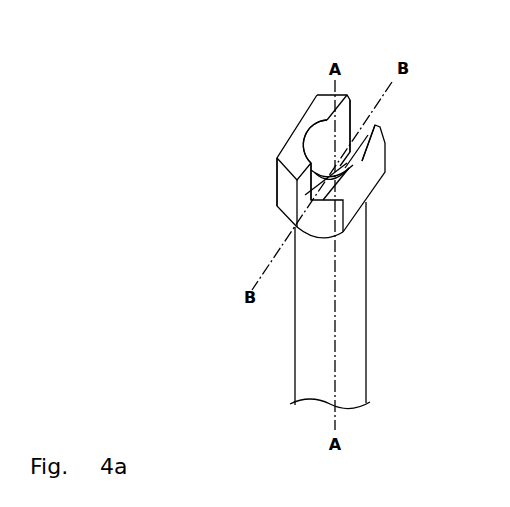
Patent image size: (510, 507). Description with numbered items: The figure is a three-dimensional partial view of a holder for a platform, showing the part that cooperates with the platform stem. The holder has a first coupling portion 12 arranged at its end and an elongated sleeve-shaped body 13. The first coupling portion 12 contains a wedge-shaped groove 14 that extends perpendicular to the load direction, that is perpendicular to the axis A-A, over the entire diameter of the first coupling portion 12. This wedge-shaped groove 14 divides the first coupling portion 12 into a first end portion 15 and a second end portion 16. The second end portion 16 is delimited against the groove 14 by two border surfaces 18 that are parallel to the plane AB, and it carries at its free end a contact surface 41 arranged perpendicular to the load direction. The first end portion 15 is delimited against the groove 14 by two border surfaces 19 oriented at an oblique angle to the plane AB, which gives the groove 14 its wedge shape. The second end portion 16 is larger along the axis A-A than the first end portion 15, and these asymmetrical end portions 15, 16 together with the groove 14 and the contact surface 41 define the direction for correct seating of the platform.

The first coupling portion 12 is at (250, 181).
The elongated sleeve-shaped body 13 is at (338, 314).
The wedge-shaped groove 14 is at (360, 122).
The first end portion 15 is at (362, 200).
The second end portion 16 is at (276, 158).
The border surfaces 18 is at (346, 136).
The border surfaces 19 is at (352, 144).
The contact surface 41 is at (291, 158).